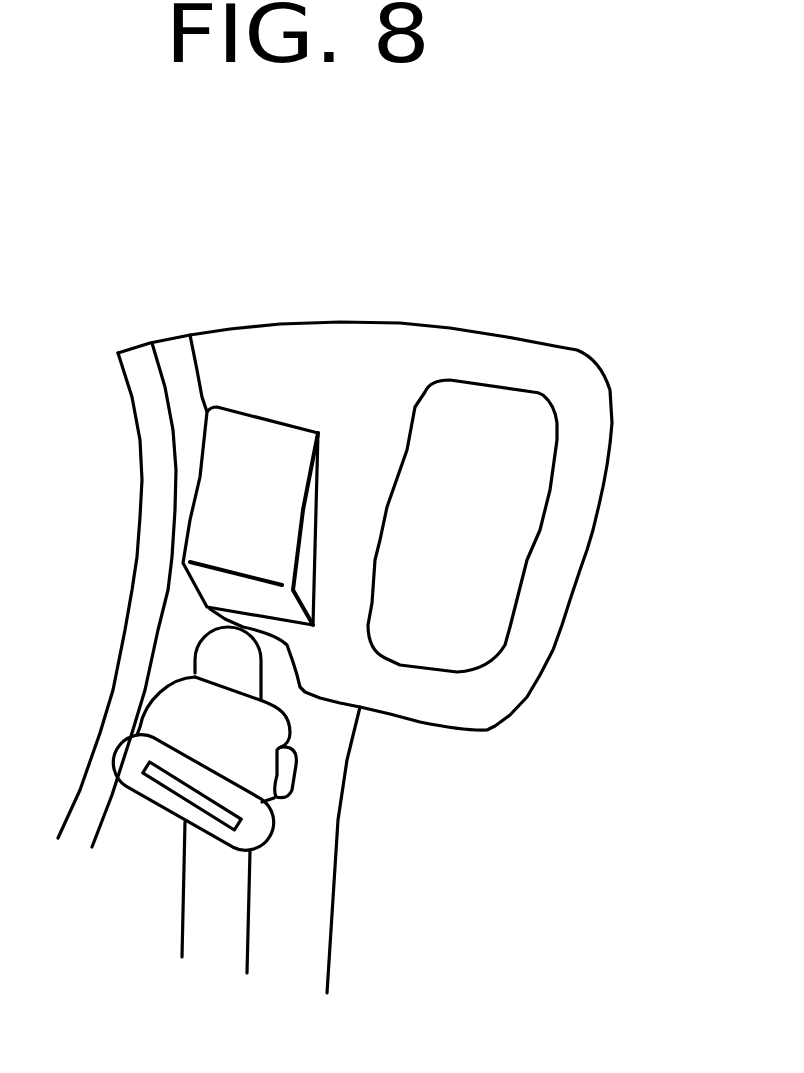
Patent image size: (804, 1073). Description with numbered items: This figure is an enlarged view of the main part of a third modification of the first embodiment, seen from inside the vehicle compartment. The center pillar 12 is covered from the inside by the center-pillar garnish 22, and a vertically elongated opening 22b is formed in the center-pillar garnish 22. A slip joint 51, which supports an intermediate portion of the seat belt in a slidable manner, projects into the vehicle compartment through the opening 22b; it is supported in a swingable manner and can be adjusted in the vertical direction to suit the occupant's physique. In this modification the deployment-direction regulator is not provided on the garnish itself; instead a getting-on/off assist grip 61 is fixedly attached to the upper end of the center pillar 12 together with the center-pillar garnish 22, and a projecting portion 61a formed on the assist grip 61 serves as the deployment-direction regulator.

The center pillar 12 is at (115, 735).
The center-pillar garnish 22 is at (182, 632).
The vertically elongated opening 22b is at (247, 900).
The slip joint 51 is at (257, 773).
The getting-on/off assist grip 61 is at (548, 590).
The projecting portion 61a is at (267, 450).